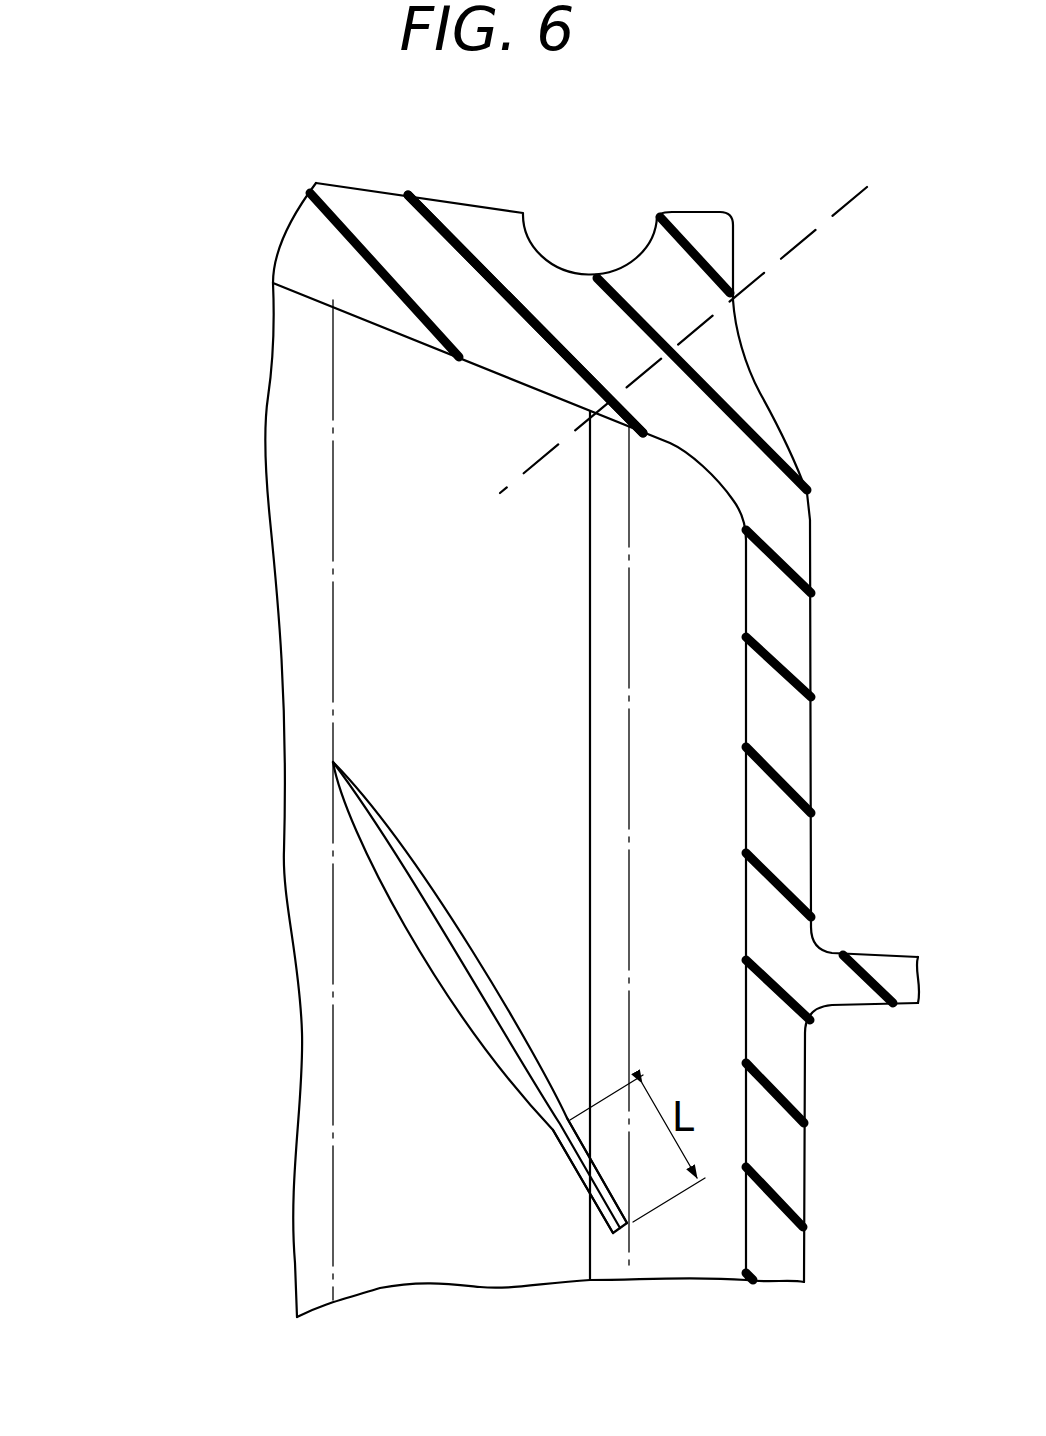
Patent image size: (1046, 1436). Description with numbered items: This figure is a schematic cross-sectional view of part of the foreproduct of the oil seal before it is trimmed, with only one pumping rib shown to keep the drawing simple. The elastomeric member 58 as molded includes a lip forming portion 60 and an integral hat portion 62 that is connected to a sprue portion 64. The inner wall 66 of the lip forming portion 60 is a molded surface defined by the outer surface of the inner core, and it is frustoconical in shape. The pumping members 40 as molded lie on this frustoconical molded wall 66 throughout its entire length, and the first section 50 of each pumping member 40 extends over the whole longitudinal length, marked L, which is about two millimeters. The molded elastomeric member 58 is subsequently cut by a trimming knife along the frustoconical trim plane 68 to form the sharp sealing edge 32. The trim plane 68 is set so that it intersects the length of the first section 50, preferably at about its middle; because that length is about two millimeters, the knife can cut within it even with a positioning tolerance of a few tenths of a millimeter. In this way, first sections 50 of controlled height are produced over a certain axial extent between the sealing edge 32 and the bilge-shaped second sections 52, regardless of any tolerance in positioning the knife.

The elastomeric member 58 is at (238, 240).
The inner wall 66 is at (315, 302).
The lip forming portion 60 is at (533, 340).
The trim plane 68 is at (850, 202).
The hat portion 62 is at (795, 622).
The sprue portion 64 is at (883, 972).
The pumping member 40 is at (363, 972).
The sealing edge 32 is at (590, 683).
The second section 52 is at (448, 1023).
The first section 50 is at (573, 1197).